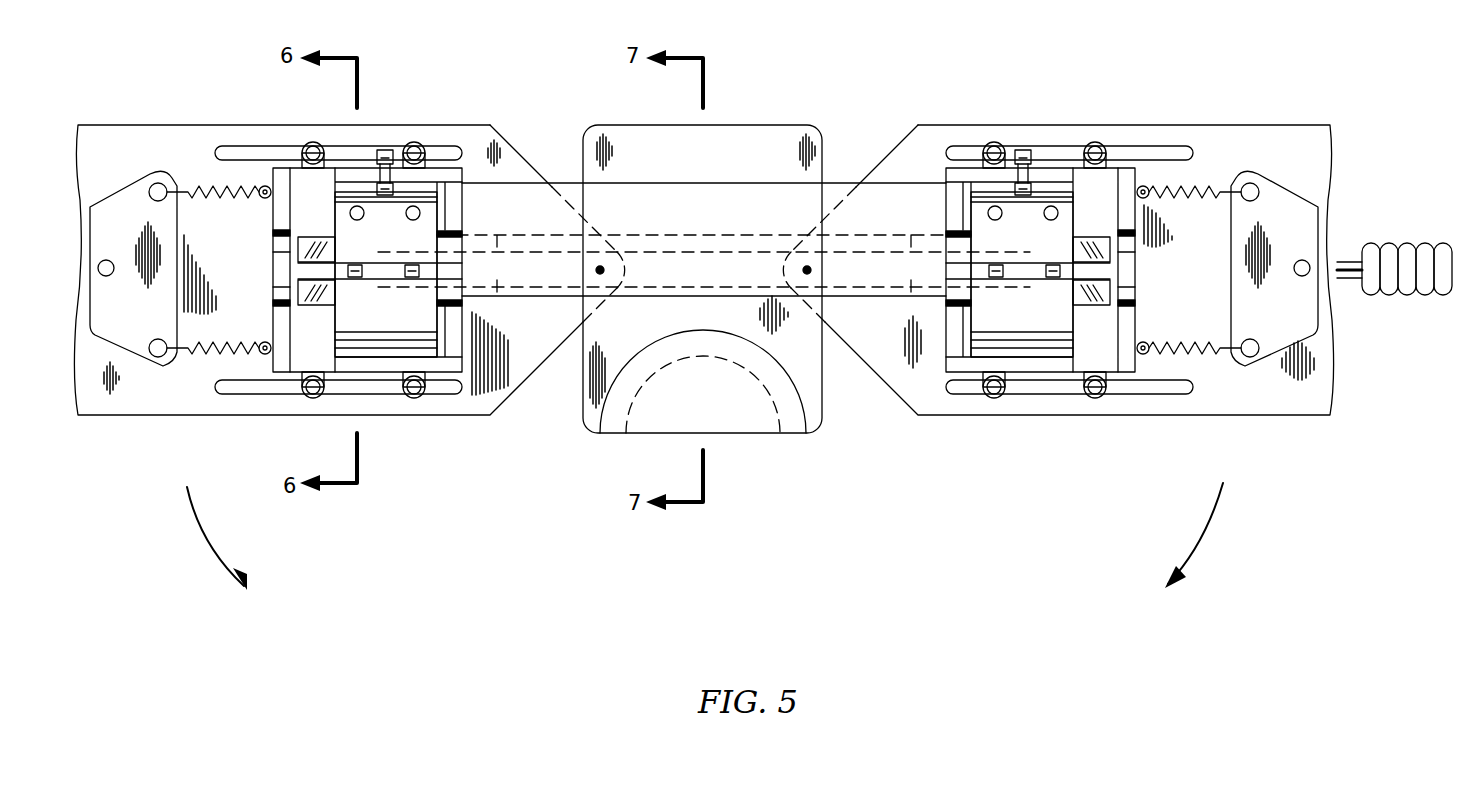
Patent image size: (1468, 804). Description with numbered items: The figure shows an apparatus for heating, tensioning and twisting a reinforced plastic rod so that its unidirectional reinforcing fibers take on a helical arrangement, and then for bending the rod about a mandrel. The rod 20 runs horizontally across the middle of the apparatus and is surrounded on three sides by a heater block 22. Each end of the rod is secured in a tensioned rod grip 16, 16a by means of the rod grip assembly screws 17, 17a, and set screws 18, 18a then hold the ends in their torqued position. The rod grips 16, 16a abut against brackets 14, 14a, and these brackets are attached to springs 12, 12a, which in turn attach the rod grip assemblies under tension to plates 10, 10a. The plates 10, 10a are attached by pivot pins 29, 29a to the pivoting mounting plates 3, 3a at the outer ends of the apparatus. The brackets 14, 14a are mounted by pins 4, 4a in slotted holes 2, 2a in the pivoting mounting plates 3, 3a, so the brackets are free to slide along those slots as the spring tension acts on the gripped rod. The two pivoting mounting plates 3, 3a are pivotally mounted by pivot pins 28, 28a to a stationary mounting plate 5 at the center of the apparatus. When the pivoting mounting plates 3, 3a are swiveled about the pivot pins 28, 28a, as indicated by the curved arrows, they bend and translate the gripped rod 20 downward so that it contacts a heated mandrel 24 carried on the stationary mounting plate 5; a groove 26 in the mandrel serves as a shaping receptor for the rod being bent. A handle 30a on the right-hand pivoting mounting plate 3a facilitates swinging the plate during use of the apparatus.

The slotted hole 2 is at (216, 412).
The slotted hole 2a is at (930, 414).
The pivoting mounting plate 3 is at (167, 127).
The pivoting mounting plate 3a is at (1235, 125).
The pin 4 is at (310, 400).
The pin 4a is at (992, 398).
The stationary mounting plate 5 is at (610, 125).
The plate 10 is at (122, 188).
The plate 10a is at (1276, 184).
The spring 12 is at (186, 188).
The spring 12a is at (1216, 187).
The bracket 14 is at (283, 168).
The bracket 14a is at (1135, 168).
The rod grip 16 is at (444, 190).
The rod grip 16a is at (1064, 190).
The rod grip assembly screws 17 is at (357, 206).
The rod grip assembly screws 17a is at (1051, 206).
The set screw 18 is at (385, 150).
The set screw 18a is at (1020, 150).
The rod 20 is at (880, 298).
The heater block 22 is at (848, 183).
The heated mandrel 24 is at (745, 434).
The groove 26 is at (764, 374).
The pivot pin 28 is at (600, 268).
The pivot pin 28a is at (807, 266).
The pivot pin 29 is at (112, 276).
The pivot pin 29a is at (1308, 262).
The handle 30a is at (1405, 244).